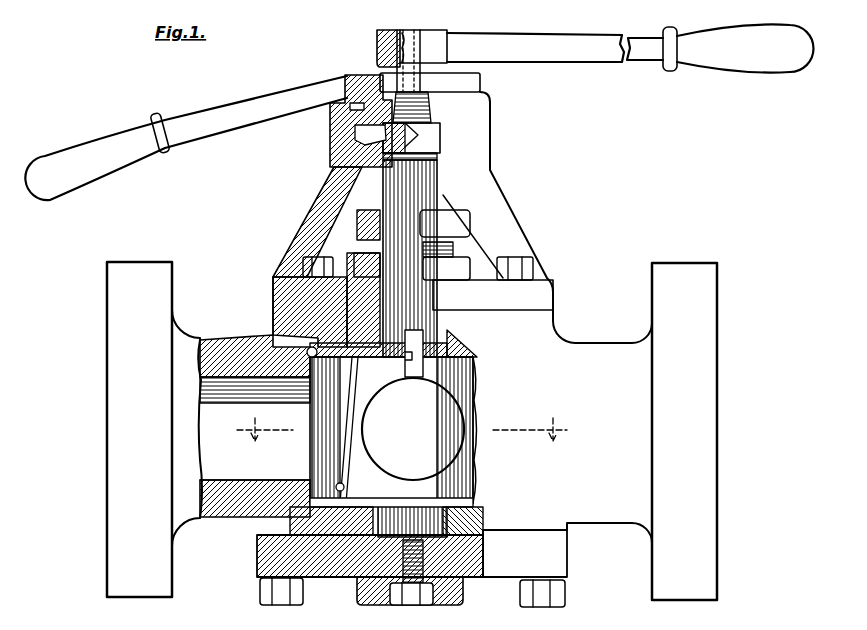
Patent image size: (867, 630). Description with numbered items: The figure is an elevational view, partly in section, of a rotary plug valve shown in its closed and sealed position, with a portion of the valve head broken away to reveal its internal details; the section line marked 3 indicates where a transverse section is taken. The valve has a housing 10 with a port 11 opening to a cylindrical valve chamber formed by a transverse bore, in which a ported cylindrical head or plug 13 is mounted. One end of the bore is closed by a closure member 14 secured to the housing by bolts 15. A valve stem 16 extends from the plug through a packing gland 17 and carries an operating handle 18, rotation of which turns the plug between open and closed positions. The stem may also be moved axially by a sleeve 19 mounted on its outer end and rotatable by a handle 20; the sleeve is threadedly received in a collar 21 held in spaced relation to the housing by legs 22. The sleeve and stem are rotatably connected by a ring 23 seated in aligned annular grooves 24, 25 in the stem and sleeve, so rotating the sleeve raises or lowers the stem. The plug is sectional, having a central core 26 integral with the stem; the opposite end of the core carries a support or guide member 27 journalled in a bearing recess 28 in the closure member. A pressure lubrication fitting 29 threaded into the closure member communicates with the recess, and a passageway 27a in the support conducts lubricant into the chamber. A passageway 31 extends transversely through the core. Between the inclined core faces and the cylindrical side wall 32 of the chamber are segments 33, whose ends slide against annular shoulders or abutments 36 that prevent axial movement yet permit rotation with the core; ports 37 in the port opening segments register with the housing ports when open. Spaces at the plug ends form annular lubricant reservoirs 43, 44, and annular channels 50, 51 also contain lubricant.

The section line 3- 3 is at (402, 421).
The housing 10 is at (563, 327).
The port 11 is at (287, 480).
The head or plug 13 is at (301, 416).
The closure member 14 is at (320, 577).
The bolts 15 is at (258, 592).
The valve stem 16 is at (384, 190).
The packing gland 17 is at (365, 240).
The operating handle 18 is at (596, 52).
The sleeve 19 is at (466, 108).
The handle 20 is at (215, 128).
The collar 21 is at (337, 123).
The legs 22 is at (302, 220).
The ring 23 is at (380, 147).
The annular groove 24 is at (418, 147).
The annular groove 25 is at (360, 110).
The central core 26 is at (378, 383).
The support or guide member 27 is at (392, 542).
The passageway 27a is at (408, 502).
The bearing recess 28 is at (467, 590).
The pressure lubrication fitting 29 is at (412, 605).
The passageway 31 is at (470, 402).
The cylindrical side wall 32 is at (314, 488).
The segment 33 is at (405, 367).
The annular shoulders or abutments 36 is at (307, 350).
The ports 37 is at (450, 462).
The annular lubricant reservoir 43 is at (470, 515).
The annular lubricant reservoir 44 is at (462, 358).
The annular passageway or channel 50 is at (253, 347).
The annular passageway or channel 51 is at (265, 520).